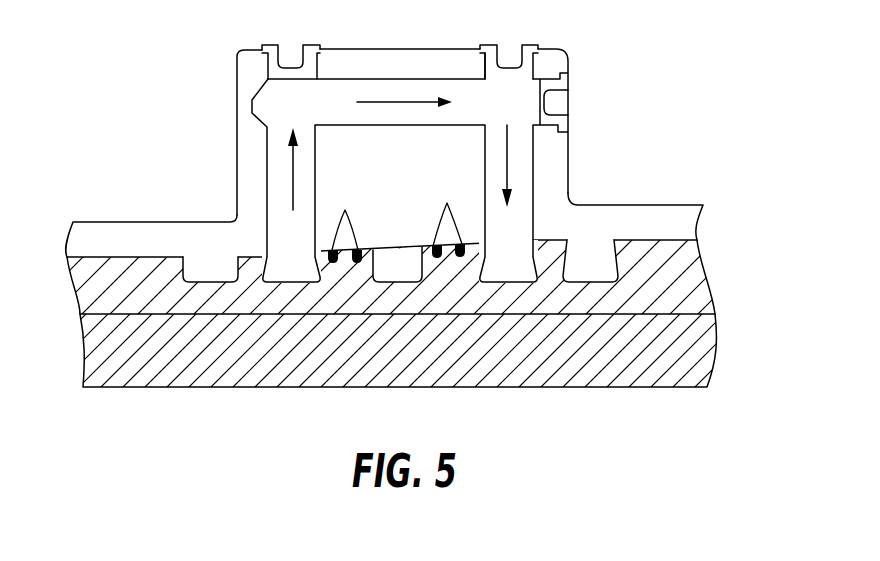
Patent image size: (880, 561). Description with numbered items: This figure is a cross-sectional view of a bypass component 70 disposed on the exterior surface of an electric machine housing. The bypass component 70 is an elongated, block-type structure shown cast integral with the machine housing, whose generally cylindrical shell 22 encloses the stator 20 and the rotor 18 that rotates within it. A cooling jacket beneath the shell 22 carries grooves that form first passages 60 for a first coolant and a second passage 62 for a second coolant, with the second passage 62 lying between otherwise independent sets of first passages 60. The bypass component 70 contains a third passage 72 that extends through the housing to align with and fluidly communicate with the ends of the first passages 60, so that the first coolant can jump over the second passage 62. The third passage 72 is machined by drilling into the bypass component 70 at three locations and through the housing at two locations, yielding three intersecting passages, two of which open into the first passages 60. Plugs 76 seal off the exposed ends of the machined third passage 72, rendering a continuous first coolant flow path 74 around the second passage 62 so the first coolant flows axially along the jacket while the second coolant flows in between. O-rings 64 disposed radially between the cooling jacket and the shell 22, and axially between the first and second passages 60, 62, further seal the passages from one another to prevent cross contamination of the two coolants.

The rotor 18 is at (693, 350).
The stator 20 is at (693, 300).
The shell 22 is at (93, 235).
The first passages 60 is at (262, 279).
The second passage 62 is at (390, 280).
The O-rings 64 is at (396, 221).
The bypass component 70 is at (238, 50).
The third passage 72 is at (377, 79).
The first coolant flow path 74 is at (405, 100).
The plugs 76 is at (311, 45).